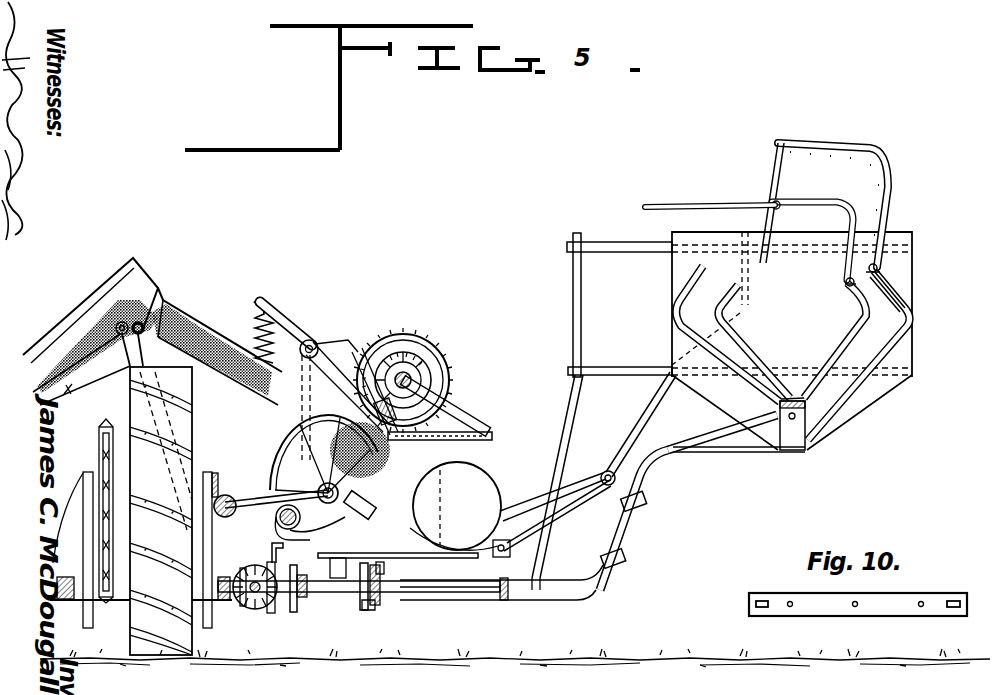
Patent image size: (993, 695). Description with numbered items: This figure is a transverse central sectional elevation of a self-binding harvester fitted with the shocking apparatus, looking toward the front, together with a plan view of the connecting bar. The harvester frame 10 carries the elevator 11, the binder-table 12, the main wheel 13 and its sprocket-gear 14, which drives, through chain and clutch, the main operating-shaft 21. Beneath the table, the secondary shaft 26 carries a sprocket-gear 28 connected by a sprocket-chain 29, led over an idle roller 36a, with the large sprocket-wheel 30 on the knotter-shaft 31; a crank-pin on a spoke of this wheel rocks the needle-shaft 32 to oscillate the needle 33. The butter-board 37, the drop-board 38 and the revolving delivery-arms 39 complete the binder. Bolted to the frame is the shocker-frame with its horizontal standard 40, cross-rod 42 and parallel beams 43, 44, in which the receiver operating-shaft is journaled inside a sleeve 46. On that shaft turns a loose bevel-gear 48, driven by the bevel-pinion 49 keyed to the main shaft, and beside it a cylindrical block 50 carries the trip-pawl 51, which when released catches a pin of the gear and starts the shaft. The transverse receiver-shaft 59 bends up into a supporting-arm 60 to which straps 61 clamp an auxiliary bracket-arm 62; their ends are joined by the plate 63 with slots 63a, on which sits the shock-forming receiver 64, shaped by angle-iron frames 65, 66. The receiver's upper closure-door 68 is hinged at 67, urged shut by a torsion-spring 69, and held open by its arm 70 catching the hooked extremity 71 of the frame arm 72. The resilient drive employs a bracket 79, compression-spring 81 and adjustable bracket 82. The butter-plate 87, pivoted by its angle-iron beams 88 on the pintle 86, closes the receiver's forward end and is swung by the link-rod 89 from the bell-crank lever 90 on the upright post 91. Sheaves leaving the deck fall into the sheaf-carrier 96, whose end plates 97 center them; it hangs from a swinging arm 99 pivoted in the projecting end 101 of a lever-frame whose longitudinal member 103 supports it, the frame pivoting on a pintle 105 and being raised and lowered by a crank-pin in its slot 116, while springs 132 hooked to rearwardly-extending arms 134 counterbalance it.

In FIG. 5, the frame 10 is at (114, 601).
In FIG. 5, the elevator 11 is at (71, 393).
In FIG. 5, the binder-table 12 is at (238, 400).
In FIG. 5, the main wheel 13 is at (130, 403).
In FIG. 5, the sprocket-gear 14 is at (99, 458).
In FIG. 5, the main operating-shaft 21 is at (250, 594).
In FIG. 5, the secondary shaft 26 is at (303, 529).
In FIG. 5, the sprocket-gear 28 is at (276, 524).
In FIG. 5, the sprocket-chain 29 is at (406, 336).
In FIG. 5, the sprocket-wheel 30 is at (383, 343).
In FIG. 5, the knotter-shaft 31 is at (422, 377).
In FIG. 5, the needle-shaft 32 is at (326, 504).
In FIG. 5, the needle 33 is at (277, 453).
In FIG. 5, the idle wheel or roller 36a is at (302, 400).
In FIG. 5, the butter-board 37 is at (190, 322).
In FIG. 5, the drop-board 38 is at (377, 495).
In FIG. 5, the delivery-arms 39 is at (470, 408).
In FIG. 5, the horizontal standard 40 is at (484, 601).
In FIG. 5, the cross-rod 42 is at (512, 599).
In FIG. 5, the parallel beam 43 is at (302, 598).
In FIG. 5, the parallel beam 44 is at (368, 610).
In FIG. 5, the sleeve 46 is at (341, 593).
In FIG. 5, the bevel-gear 48 is at (268, 612).
In FIG. 5, the bevel-pinion 49 is at (256, 582).
In FIG. 5, the cylindrical block 50 is at (293, 613).
In FIG. 5, the trip-pawl 51 is at (294, 553).
In FIG. 5, the shaft 59 is at (453, 594).
In FIG. 5, the supporting-arm 60 is at (660, 456).
In FIG. 5, the straps 61 is at (625, 563).
In FIG. 5, the auxiliary bracket-arm 62 is at (684, 459).
In FIG. 5, the plate 63 is at (800, 430).
In FIG. 10, the plate 63 is at (882, 610).
In FIG. 10, the slots 63a is at (762, 609).
In FIG. 5, the shock-forming receiver 64 is at (870, 345).
In FIG. 5, the angle-iron frame 65 is at (843, 363).
In FIG. 5, the angle-iron frame 66 is at (850, 392).
In FIG. 5, the hinge 67 is at (876, 265).
In FIG. 5, the closure-door 68 is at (864, 166).
In FIG. 5, the torsion-spring 69 is at (893, 286).
In FIG. 5, the arm 70 is at (762, 264).
In FIG. 5, the hooked extremity 71 is at (784, 207).
In FIG. 5, the arm 72 is at (686, 204).
In FIG. 5, the bracket 79 is at (370, 600).
In FIG. 5, the compression-spring 81 is at (382, 594).
In FIG. 5, the bracket 82 is at (384, 568).
In FIG. 5, the pintle 86 is at (582, 311).
In FIG. 5, the butter-plate 87 is at (900, 385).
In FIG. 5, the angle-iron beams 88 is at (627, 253).
In FIG. 5, the link-rod 89 is at (622, 424).
In FIG. 5, the bell-crank lever 90 is at (405, 556).
In FIG. 5, the upright post 91 is at (342, 572).
In FIG. 5, the sheaf-carrier 96 is at (502, 487).
In FIG. 5, the end plates 97 is at (455, 506).
In FIG. 5, the swinging arm 99 is at (567, 498).
In FIG. 5, the projecting end 101 is at (612, 468).
In FIG. 5, the longitudinal member 103 is at (499, 557).
In FIG. 5, the pintle 105 is at (308, 339).
In FIG. 5, the slot 116 is at (430, 444).
In FIG. 5, the springs 132 is at (253, 337).
In FIG. 5, the rearwardly-extending arms 134 is at (278, 308).